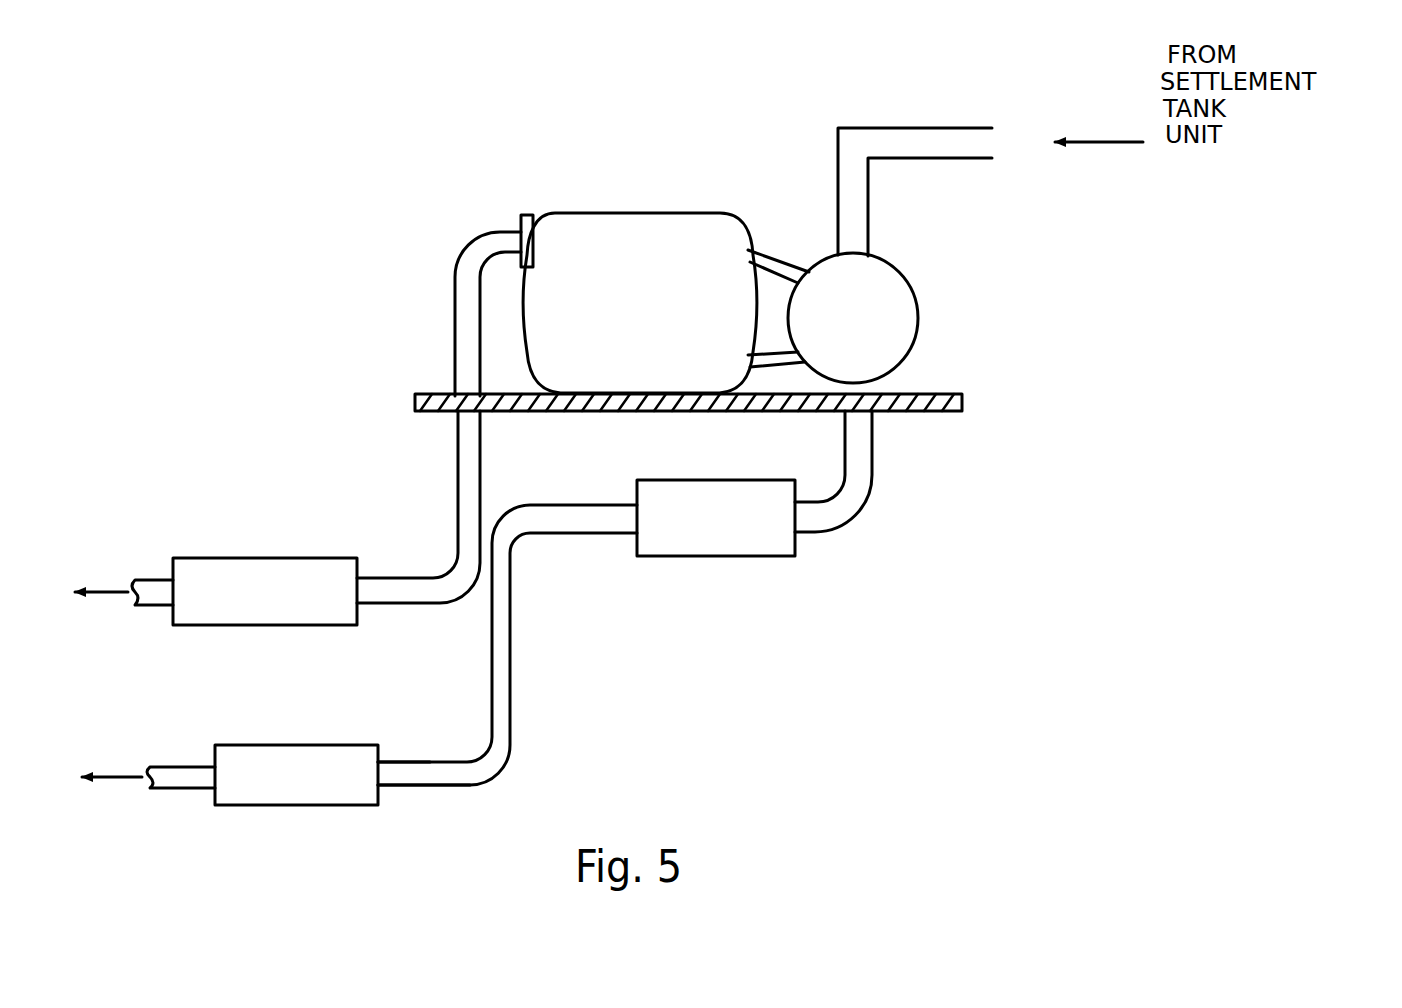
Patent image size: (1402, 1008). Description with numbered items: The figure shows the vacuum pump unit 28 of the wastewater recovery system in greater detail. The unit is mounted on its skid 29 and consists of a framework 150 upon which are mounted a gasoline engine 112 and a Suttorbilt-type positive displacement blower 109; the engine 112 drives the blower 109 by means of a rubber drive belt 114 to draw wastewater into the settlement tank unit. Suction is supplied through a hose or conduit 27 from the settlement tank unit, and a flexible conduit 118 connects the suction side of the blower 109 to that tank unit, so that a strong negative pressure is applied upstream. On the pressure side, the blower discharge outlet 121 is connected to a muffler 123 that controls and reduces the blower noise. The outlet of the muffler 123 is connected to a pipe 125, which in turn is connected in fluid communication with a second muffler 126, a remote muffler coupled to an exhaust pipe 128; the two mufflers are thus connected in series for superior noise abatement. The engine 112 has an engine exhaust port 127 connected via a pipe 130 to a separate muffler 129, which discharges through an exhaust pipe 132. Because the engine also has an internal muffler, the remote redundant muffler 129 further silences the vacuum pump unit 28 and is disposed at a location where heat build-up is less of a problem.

The hose or conduit 27 is at (908, 127).
The vacuum pump unit 28 is at (485, 818).
The skid 29 is at (937, 393).
The blower 109 is at (922, 289).
The engine 112 is at (647, 200).
The drive belt 114 is at (780, 258).
The conduit 118 is at (850, 197).
The blower discharge outlet 121 is at (882, 477).
The muffler 123 is at (758, 562).
The pipe 125 is at (500, 658).
The second muffler 126 is at (214, 804).
The engine exhaust port 127 is at (528, 211).
The exhaust pipe 128 is at (175, 767).
The muffler 129 is at (240, 551).
The pipe 130 is at (483, 481).
The exhaust pipe 132 is at (160, 604).
The framework 150 is at (885, 403).